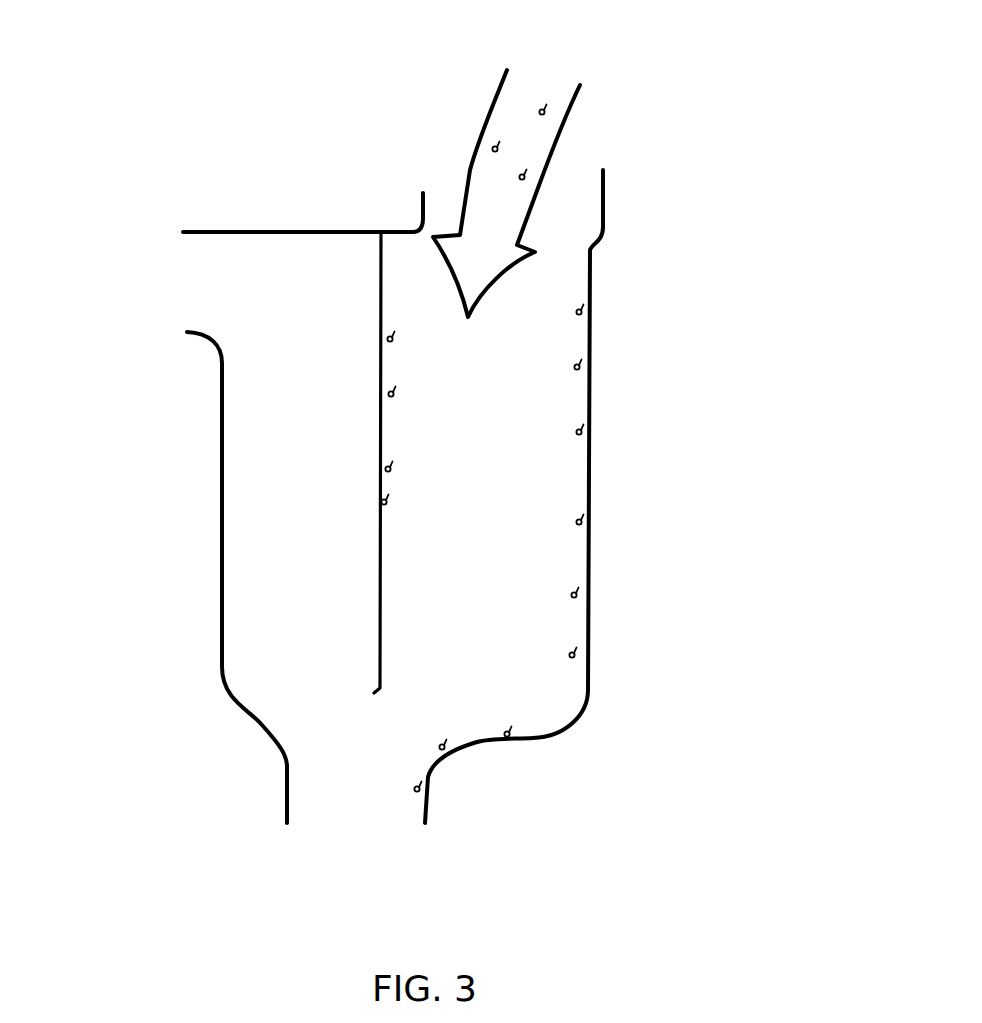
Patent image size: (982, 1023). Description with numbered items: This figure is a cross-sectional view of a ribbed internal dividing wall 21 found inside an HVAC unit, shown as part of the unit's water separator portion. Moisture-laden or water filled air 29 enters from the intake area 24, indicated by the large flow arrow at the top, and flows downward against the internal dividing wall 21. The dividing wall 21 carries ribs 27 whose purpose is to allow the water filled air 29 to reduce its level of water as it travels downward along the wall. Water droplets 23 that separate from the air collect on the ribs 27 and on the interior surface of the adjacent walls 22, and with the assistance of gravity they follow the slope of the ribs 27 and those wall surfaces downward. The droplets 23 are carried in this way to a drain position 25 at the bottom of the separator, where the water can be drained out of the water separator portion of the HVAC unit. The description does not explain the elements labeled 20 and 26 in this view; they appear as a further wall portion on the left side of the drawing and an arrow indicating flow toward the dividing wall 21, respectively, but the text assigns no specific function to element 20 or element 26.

The inlet housing wall 20 is at (212, 566).
The internal dividing wall 21 is at (382, 290).
The adjacent walls 22 is at (590, 357).
The water droplets 23 is at (382, 457).
The intake area 24 is at (452, 163).
The drain position 25 is at (388, 803).
The inlet flow arrow 26 is at (214, 285).
The ribs 27 is at (380, 437).
The water filled air 29 is at (508, 113).